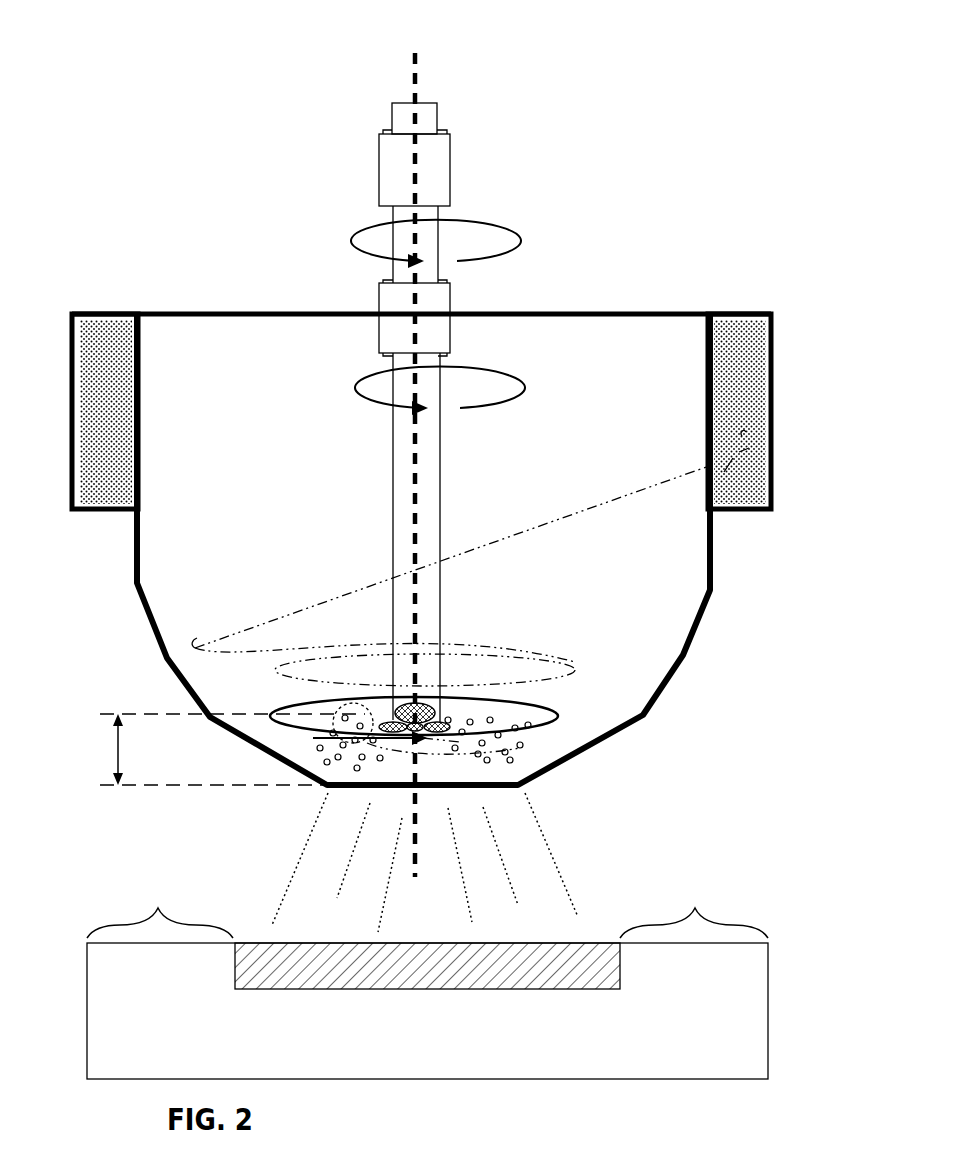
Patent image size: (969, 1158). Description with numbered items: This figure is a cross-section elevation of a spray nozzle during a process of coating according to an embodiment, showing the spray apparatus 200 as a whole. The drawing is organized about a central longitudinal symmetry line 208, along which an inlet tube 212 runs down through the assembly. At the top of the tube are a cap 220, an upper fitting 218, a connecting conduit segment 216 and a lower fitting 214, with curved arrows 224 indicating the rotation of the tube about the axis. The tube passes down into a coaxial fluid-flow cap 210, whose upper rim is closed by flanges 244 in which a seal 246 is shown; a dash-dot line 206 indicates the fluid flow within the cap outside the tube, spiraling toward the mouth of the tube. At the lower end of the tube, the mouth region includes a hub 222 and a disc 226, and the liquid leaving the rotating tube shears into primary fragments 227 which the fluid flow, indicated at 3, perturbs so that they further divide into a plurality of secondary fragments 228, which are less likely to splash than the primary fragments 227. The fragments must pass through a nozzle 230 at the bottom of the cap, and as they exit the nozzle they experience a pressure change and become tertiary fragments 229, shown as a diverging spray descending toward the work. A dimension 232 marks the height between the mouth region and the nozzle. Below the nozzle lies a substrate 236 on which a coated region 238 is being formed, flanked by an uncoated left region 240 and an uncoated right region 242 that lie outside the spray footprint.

The system 200 is at (738, 124).
The liquid level / vortex line 206 is at (578, 512).
The central axis 208 is at (413, 75).
The vessel 210 is at (717, 543).
The shaft 212 is at (393, 512).
The lower bearing block 214 is at (380, 300).
The shaft segment 216 is at (438, 248).
The upper bearing block 218 is at (379, 183).
The shaft cap 220 is at (438, 118).
The impeller hub 222 is at (383, 716).
The rotation direction 224 is at (332, 233).
The impeller disc 226 is at (287, 708).
The primary fragment 227 is at (447, 722).
The secondary fragments 228 is at (497, 737).
The spray 229 is at (558, 865).
The outlet 230 is at (508, 790).
The height 232 is at (116, 743).
The substrate 236 is at (132, 1003).
The coated region 238 is at (322, 943).
The left uncoated region 240 is at (160, 909).
The right uncoated region 242 is at (694, 909).
The flange 244 is at (773, 388).
The seal 246 is at (717, 463).
The flow direction 3 is at (367, 737).